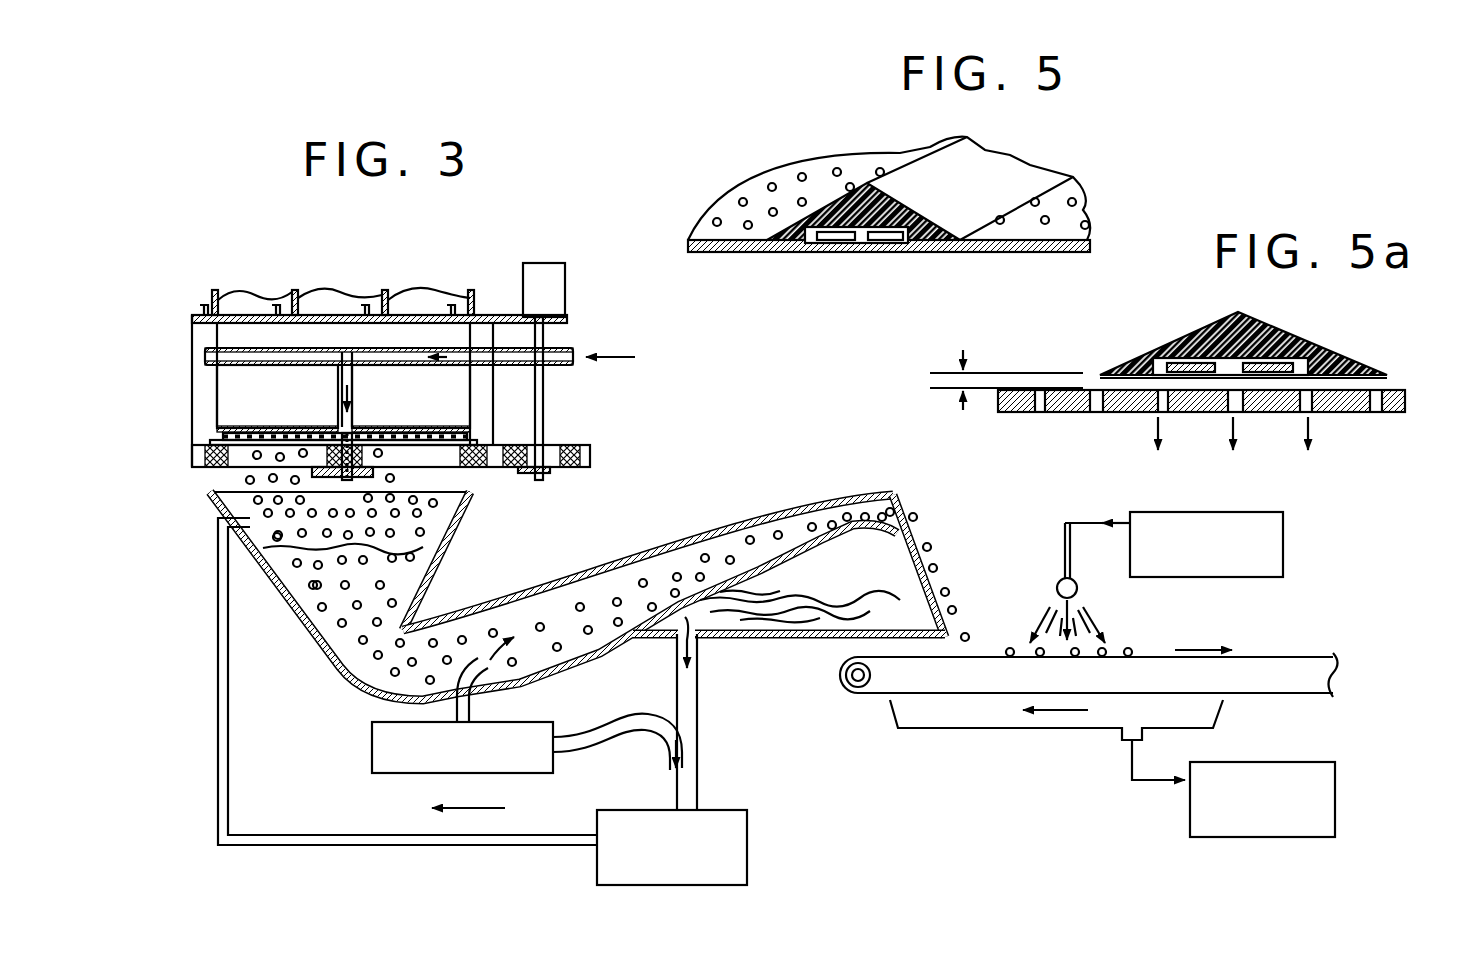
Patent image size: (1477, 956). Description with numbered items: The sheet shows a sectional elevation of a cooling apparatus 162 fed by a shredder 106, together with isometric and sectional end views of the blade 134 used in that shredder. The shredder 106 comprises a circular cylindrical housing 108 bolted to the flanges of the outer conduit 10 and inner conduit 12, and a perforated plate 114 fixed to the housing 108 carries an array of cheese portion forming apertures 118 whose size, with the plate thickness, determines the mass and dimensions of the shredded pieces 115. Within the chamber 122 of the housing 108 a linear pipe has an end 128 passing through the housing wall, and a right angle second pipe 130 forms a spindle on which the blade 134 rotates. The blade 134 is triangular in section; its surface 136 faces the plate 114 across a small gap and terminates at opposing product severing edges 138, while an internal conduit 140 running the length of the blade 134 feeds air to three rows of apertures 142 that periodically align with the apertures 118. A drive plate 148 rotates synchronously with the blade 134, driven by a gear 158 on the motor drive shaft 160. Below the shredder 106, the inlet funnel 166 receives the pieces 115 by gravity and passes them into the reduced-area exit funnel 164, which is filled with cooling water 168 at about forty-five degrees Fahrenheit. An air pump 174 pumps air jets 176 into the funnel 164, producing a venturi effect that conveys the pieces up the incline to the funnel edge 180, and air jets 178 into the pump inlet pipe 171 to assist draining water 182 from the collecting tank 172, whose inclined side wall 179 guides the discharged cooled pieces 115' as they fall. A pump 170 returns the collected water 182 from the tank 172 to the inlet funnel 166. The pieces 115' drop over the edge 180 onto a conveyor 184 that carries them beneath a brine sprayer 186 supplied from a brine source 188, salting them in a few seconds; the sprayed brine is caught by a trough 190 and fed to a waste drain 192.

In FIG. 3, the outer conduit 10 is at (230, 290).
In FIG. 3, the inner conduit 12 is at (330, 290).
In FIG. 3, the shredder 106 is at (441, 272).
In FIG. 3, the circular cylindrical housing 108 is at (192, 345).
In FIG. 3, the chamber 122 is at (228, 400).
In FIG. 3, the other end of linear pipe 128 is at (571, 367).
In FIG. 3, the right angle second stainless steel pipe 130 is at (358, 410).
In FIG. 3, the blade 134 is at (312, 433).
In FIG. 5, the blade 134 is at (1036, 156).
In FIG. 5A, the blade 134 is at (1234, 308).
In FIG. 3, the drive plate 148 is at (210, 453).
In FIG. 3, the gear 158 is at (590, 450).
In FIG. 3, the drive shaft 160 is at (547, 336).
In FIG. 3, the cooling apparatus 162 is at (752, 485).
In FIG. 3, the exit funnel 164 is at (626, 652).
In FIG. 3, the inlet funnel 166 is at (448, 546).
In FIG. 3, the cooling water 168 is at (670, 565).
In FIG. 3, the pump 170 is at (747, 865).
In FIG. 3, the pump inlet pipe 171 is at (697, 790).
In FIG. 3, the collecting tank 172 is at (826, 638).
In FIG. 3, the air pump 174 is at (372, 757).
In FIG. 3, the air jets 176 is at (510, 667).
In FIG. 3, the air jets 178 is at (680, 732).
In FIG. 3, the inclined side wall 179 is at (937, 566).
In FIG. 3, the funnel edge 180 is at (918, 514).
In FIG. 3, the water 182 is at (843, 607).
In FIG. 3, the conveyor 184 is at (1290, 656).
In FIG. 3, the brine sprayer 186 is at (1078, 586).
In FIG. 3, the brine source 188 is at (1283, 566).
In FIG. 3, the trough 190 is at (968, 730).
In FIG. 3, the waste drain 192 is at (1335, 790).
In FIG. 3, the shredded pieces 115 is at (371, 663).
In FIG. 3, the cooled pieces 115' is at (982, 611).
In FIG. 5, the perforated plate 114 is at (1067, 222).
In FIG. 5A, the perforated plate 114 is at (1400, 405).
In FIG. 5, the apertures 118 is at (803, 174).
In FIG. 5A, the apertures 118 is at (1033, 391).
In FIG. 5, the surface 136 is at (790, 252).
In FIG. 5A, the surface 136 is at (1198, 380).
In FIG. 5, the product severing edges 138 is at (710, 227).
In FIG. 5A, the product severing edges 138 is at (1105, 375).
In FIG. 5, the internal conduit 140 is at (866, 182).
In FIG. 5A, the internal conduit 140 is at (1270, 320).
In FIG. 5, the apertures 142 is at (893, 272).
In FIG. 5A, the apertures 142 is at (1160, 363).